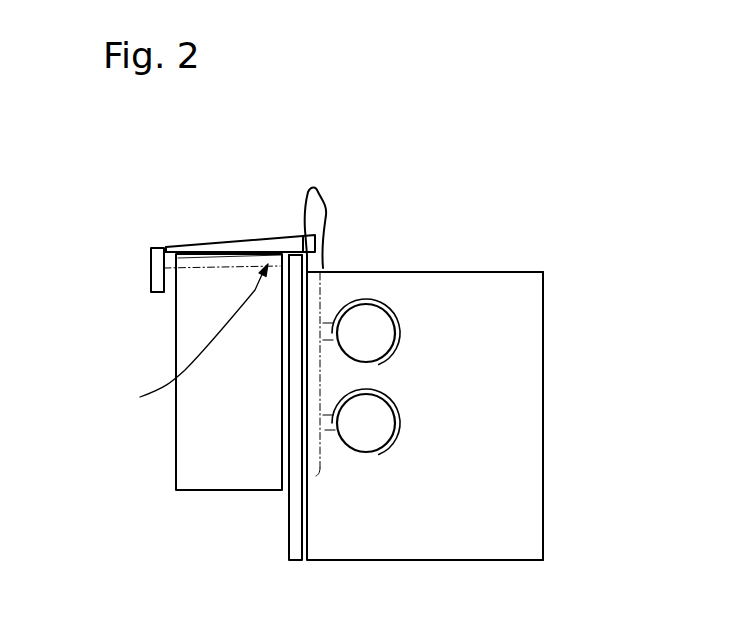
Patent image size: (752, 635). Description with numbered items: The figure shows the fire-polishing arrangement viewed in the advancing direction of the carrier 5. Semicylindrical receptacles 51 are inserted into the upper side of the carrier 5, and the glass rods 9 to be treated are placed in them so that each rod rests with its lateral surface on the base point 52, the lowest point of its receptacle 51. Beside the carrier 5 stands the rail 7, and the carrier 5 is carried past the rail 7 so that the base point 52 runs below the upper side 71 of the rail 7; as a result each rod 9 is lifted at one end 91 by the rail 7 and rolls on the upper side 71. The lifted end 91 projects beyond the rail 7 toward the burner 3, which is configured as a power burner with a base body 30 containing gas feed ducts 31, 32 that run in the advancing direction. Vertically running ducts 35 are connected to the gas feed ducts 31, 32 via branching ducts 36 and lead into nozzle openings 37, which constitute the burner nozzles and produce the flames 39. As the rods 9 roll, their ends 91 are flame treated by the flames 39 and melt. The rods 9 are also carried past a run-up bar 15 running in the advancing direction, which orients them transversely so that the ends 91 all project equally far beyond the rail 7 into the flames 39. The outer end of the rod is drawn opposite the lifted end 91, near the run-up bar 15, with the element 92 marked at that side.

The burner 3 is at (543, 368).
The carrier 5 is at (218, 488).
The rail 7 is at (295, 535).
The glass rod 9 is at (195, 245).
The run-up bar 15 is at (151, 268).
The base body 30 is at (472, 407).
The gas feed duct 31 is at (368, 332).
The gas feed duct 32 is at (370, 428).
The duct 35 is at (317, 292).
The branching duct 36 is at (328, 342).
The nozzle opening 37 is at (322, 267).
The flame 39 is at (322, 193).
The receptacle 51 is at (194, 350).
The base point 52 is at (232, 268).
The upper side 71 is at (288, 256).
The rod end 91 is at (299, 254).
The bar end 92 is at (167, 250).